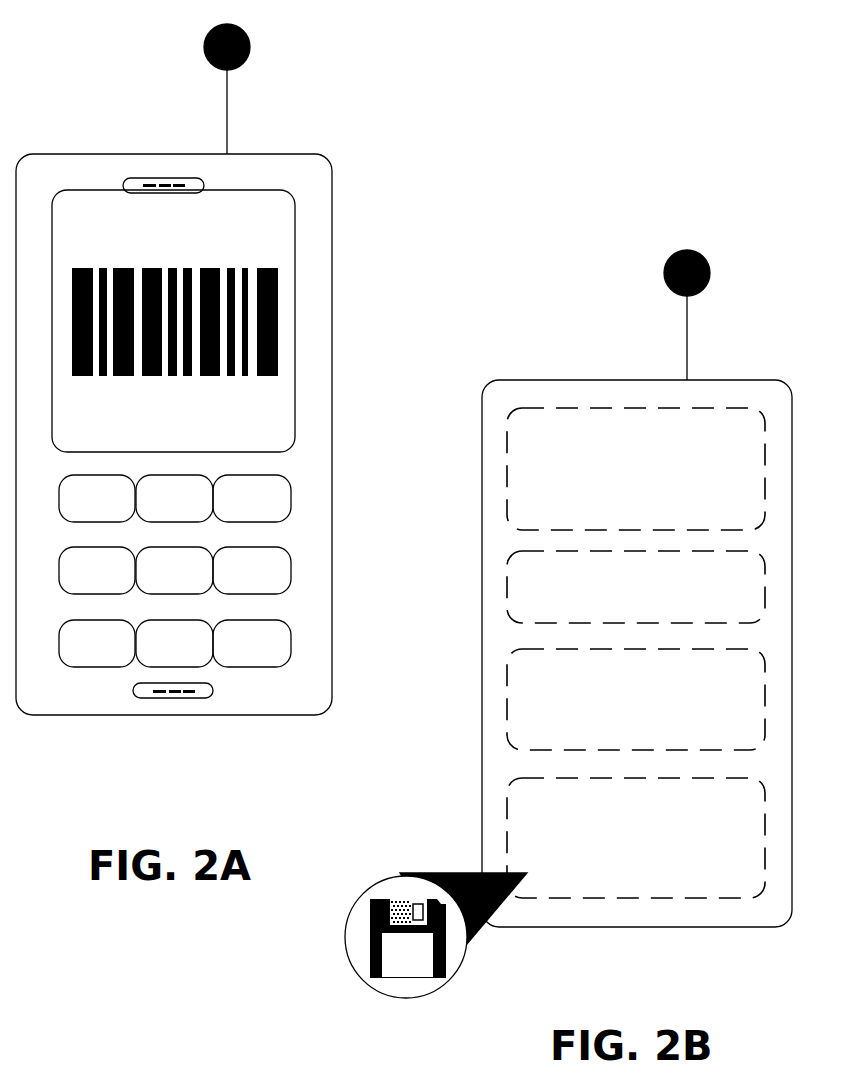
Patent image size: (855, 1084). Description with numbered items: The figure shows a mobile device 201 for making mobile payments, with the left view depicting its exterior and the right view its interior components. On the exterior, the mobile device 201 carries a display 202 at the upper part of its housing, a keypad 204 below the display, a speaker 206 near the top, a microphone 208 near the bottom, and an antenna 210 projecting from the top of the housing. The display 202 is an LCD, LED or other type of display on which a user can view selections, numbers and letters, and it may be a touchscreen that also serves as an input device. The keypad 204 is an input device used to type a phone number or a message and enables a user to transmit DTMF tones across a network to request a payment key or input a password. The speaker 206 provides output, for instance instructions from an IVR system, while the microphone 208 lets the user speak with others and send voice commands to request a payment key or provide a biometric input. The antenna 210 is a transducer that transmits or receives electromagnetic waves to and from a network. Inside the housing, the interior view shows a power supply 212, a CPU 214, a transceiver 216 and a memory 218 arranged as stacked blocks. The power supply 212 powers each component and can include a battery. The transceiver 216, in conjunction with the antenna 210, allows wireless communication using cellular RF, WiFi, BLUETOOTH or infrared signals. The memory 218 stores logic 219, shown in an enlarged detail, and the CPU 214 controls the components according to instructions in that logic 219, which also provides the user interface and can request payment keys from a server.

In FIG. 2B, the mobile device 201 is at (637, 494).
In FIG. 2A, the display 202 is at (249, 311).
In FIG. 2A, the keypad 204 is at (257, 499).
In FIG. 2A, the speaker 206 is at (119, 152).
In FIG. 2A, the microphone 208 is at (113, 721).
In FIG. 2A, the antenna 210 is at (287, 77).
In FIG. 2B, the power supply 212 is at (572, 469).
In FIG. 2B, the central processing unit (CPU) 214 is at (572, 573).
In FIG. 2B, the transceiver 216 is at (574, 699).
In FIG. 2B, the memory 218 is at (571, 838).
In FIG. 2B, the logic 219 is at (386, 952).